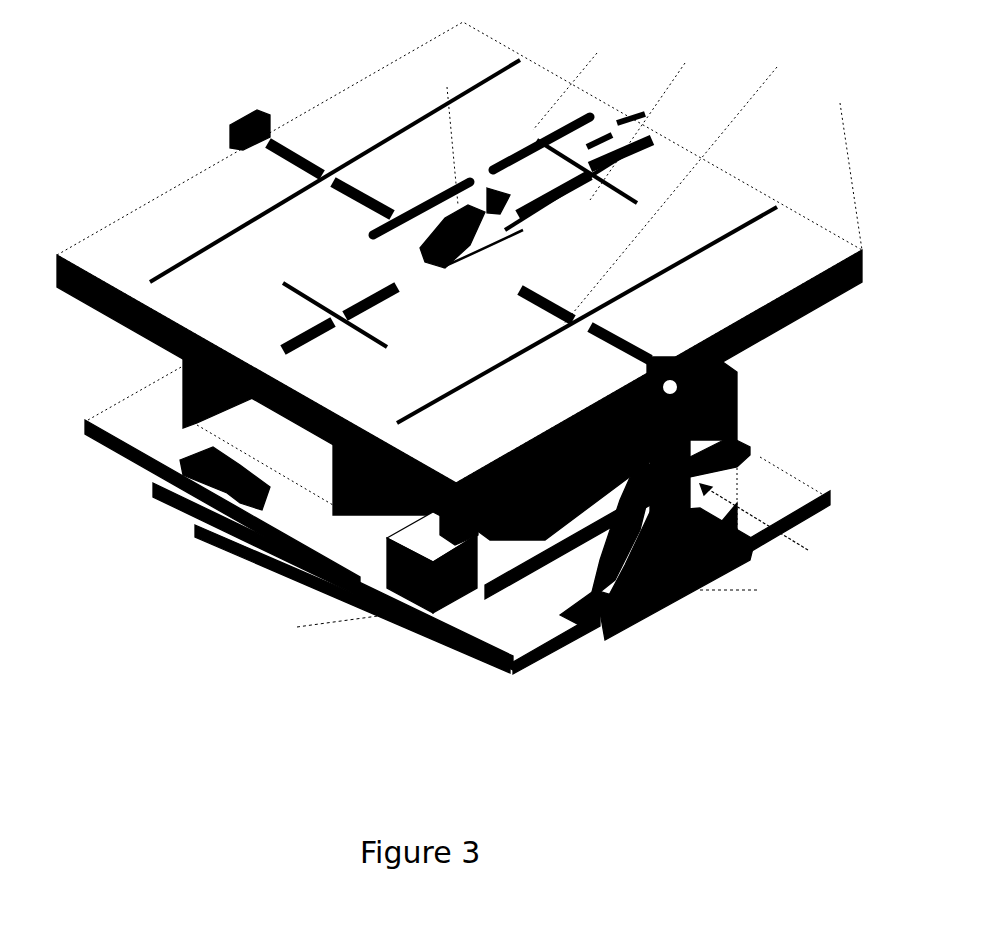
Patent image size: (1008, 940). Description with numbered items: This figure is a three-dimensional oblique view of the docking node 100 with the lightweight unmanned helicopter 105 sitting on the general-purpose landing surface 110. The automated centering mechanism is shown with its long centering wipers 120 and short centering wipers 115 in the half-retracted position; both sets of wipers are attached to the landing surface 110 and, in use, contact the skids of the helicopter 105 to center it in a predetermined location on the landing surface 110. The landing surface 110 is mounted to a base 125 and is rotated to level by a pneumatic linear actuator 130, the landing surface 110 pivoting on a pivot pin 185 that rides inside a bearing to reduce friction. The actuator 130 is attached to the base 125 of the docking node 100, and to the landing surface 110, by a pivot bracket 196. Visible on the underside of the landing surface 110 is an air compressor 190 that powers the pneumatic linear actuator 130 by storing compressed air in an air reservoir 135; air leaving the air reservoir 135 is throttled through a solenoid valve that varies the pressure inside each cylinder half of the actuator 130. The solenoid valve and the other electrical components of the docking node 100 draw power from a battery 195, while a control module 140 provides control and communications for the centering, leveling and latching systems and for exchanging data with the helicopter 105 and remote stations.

The docking node 100 is at (782, 54).
The lightweight unmanned helicopter 105 is at (480, 170).
The landing surface 110 is at (723, 188).
The short centering wipers 115 is at (305, 293).
The long centering wipers 120 is at (455, 97).
The base 125 is at (780, 468).
The linear actuator 130 is at (700, 407).
The air reservoir 135 is at (742, 380).
The control module 140 is at (272, 542).
The pivot pin 185 is at (690, 350).
The air compressor 190 is at (463, 580).
The battery 195 is at (310, 567).
The pivot bracket 196 is at (670, 577).